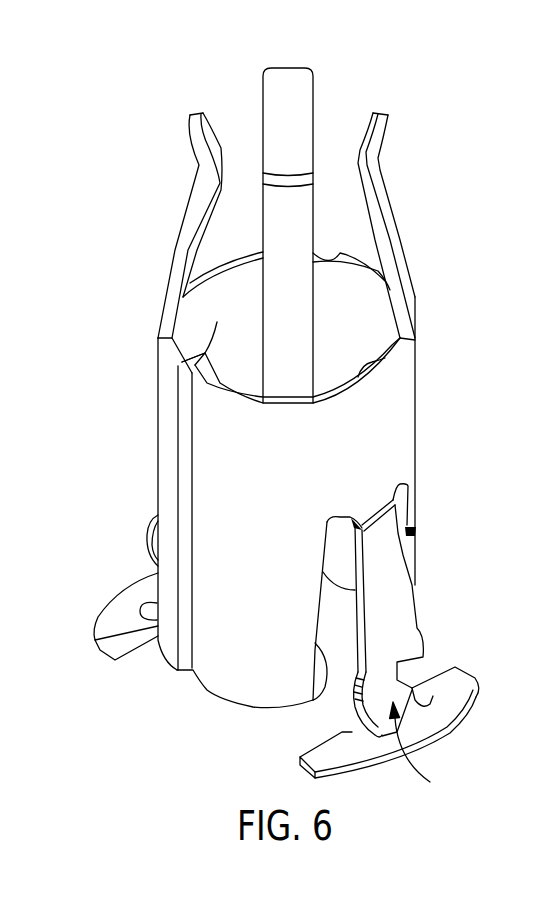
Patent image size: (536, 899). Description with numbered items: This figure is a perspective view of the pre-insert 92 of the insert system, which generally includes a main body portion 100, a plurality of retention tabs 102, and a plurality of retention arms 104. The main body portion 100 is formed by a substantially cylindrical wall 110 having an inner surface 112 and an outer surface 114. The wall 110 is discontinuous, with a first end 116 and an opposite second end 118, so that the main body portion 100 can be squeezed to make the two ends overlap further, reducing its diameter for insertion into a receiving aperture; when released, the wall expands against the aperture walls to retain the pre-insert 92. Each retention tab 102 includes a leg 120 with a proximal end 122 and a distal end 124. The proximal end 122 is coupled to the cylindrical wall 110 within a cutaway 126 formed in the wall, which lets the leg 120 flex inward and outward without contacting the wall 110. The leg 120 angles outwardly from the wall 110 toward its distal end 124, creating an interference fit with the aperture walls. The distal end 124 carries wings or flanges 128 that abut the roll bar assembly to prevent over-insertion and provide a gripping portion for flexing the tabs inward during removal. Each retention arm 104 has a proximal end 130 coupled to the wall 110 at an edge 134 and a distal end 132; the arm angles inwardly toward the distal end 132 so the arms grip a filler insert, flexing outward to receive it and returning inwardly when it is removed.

The pre-insert 92 is at (443, 89).
The main body portion 100 is at (291, 463).
The retention tab 102 is at (291, 649).
The retention arm 104 is at (317, 224).
The cylindrical wall 110 is at (242, 668).
The inner surface 112 is at (306, 311).
The outer surface 114 is at (405, 393).
The first end 116 is at (207, 350).
The second end 118 is at (185, 447).
The leg 120 is at (405, 595).
The proximal end 122 is at (415, 530).
The distal end 124 is at (416, 758).
The cutaway 126 is at (295, 717).
The flange 128 is at (117, 618).
The proximal end 130 is at (407, 298).
The distal end 132 is at (385, 135).
The edge 134 is at (415, 347).